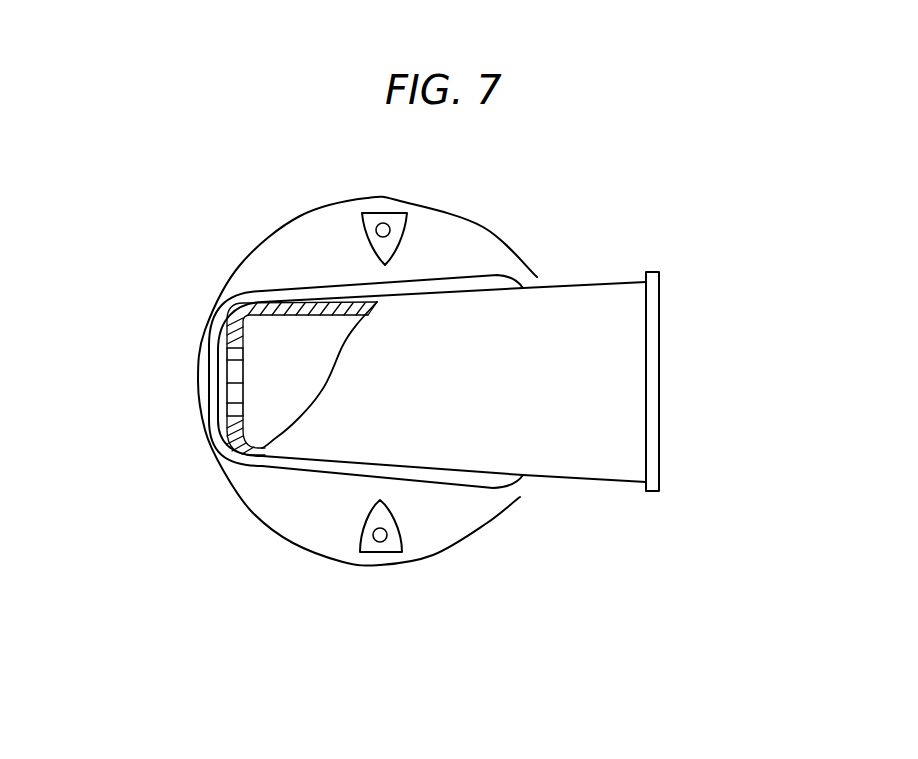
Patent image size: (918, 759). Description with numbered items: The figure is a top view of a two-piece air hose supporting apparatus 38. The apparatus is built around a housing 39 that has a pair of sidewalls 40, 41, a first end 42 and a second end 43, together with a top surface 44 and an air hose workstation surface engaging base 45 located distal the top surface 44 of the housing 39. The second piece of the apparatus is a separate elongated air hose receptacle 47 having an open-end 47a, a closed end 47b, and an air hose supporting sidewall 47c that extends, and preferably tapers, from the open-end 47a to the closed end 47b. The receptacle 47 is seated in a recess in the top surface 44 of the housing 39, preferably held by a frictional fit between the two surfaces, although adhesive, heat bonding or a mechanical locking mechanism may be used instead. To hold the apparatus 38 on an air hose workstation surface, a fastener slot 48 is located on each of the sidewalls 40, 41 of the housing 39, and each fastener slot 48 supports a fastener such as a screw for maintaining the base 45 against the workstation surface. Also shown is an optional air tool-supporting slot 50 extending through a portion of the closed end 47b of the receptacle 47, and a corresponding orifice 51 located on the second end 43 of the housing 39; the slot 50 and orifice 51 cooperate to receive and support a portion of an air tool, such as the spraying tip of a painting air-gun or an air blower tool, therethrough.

The two-piece air hose supporting apparatus 38 is at (677, 178).
The housing 39 is at (262, 262).
The sidewall 40 is at (318, 528).
The sidewall 41 is at (475, 242).
The first end 42 is at (520, 490).
The second end 43 is at (203, 433).
The top surface 44 is at (270, 468).
The air hose workstation surface engaging base 45 is at (495, 526).
The elongated air hose receptacle 47 is at (612, 262).
The open-end 47a is at (660, 367).
The closed end 47b is at (227, 432).
The air hose supporting sidewall 47c is at (300, 320).
The fastener slot 48 is at (388, 223).
The air tool-supporting slot 50 is at (237, 383).
The orifice 51 is at (215, 395).